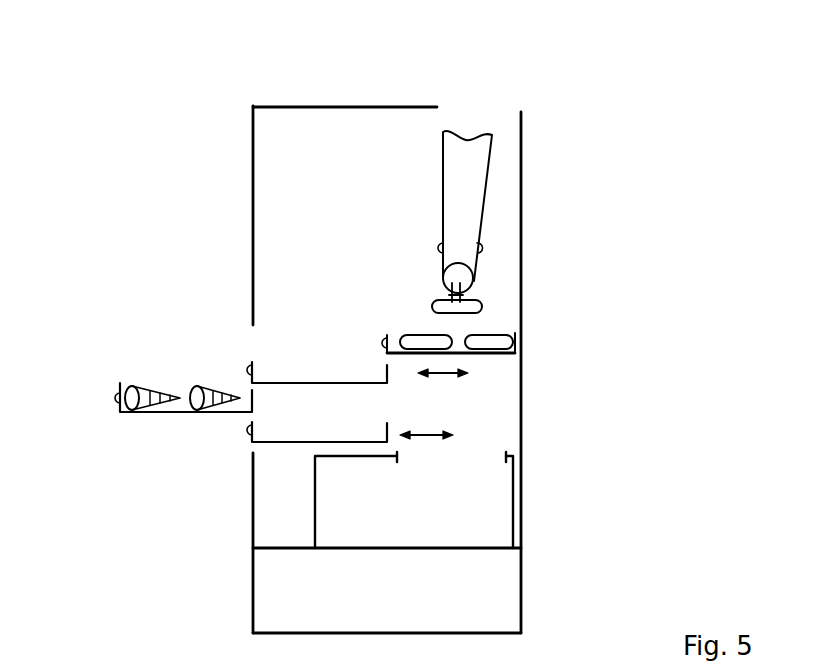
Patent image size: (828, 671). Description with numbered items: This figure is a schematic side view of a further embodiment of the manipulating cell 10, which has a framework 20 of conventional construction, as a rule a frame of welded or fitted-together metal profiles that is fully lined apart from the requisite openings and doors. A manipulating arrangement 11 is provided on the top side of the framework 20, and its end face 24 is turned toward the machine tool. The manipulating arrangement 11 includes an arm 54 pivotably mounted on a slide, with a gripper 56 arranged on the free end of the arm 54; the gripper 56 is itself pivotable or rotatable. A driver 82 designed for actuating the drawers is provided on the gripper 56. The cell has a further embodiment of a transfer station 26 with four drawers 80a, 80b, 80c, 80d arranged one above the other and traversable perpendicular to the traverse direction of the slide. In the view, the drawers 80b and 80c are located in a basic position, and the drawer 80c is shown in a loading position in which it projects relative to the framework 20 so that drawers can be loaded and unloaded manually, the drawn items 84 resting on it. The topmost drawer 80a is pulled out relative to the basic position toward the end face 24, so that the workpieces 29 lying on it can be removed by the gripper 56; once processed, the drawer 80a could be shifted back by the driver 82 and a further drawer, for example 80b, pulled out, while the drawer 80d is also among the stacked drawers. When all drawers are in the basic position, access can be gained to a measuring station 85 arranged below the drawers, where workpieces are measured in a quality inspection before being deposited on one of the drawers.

The manipulating cell 10 is at (620, 123).
The manipulating arrangement 11 is at (509, 93).
The framework 20 is at (253, 218).
The end face 24 is at (523, 605).
The transfer station 26 is at (194, 298).
The workpieces 29 is at (442, 342).
The arm 54 is at (473, 198).
The gripper 56 is at (388, 222).
The topmost drawer 80a is at (505, 357).
The drawer 80b is at (388, 380).
The drawer 80c is at (252, 400).
The drawer 80d is at (250, 440).
The driver 82 is at (465, 297).
The cone-shaped items 84 is at (145, 387).
The measuring station 85 is at (497, 522).